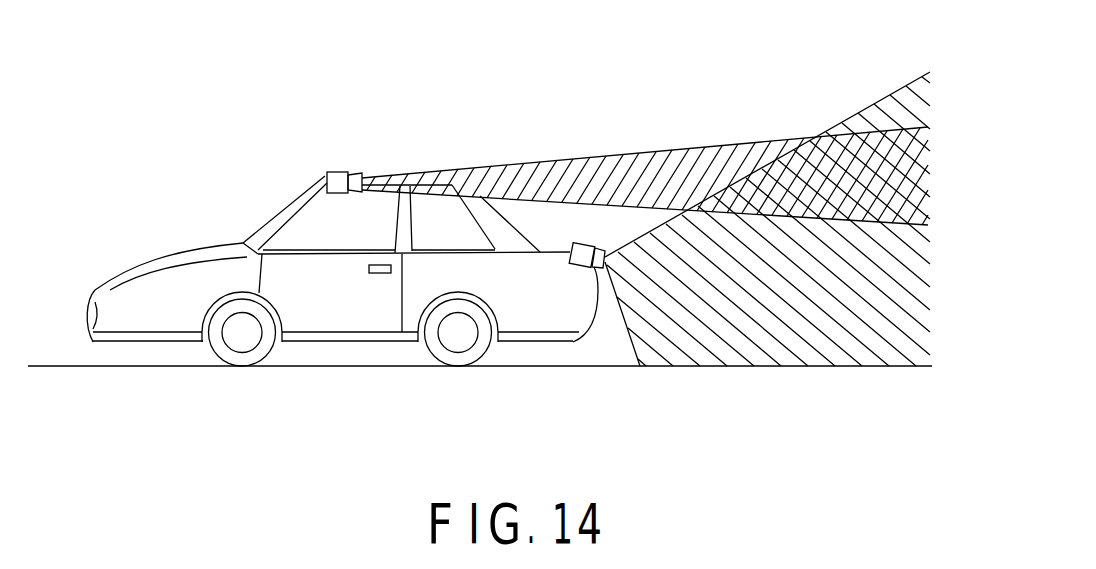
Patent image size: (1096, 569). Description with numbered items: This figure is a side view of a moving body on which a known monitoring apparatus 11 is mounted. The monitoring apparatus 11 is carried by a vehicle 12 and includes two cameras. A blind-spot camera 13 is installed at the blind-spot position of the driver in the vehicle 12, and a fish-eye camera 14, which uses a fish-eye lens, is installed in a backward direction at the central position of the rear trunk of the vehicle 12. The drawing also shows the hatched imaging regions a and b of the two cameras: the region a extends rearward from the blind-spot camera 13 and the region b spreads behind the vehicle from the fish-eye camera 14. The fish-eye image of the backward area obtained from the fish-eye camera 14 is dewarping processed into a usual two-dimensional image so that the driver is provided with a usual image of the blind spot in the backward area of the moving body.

The monitoring apparatus 11 is at (433, 146).
The vehicle 12 is at (262, 227).
The blind-spot camera 13 is at (339, 176).
The fish-eye camera 14 is at (582, 260).
The imaging region of front camera a is at (636, 167).
The imaging region of rear camera b is at (744, 347).